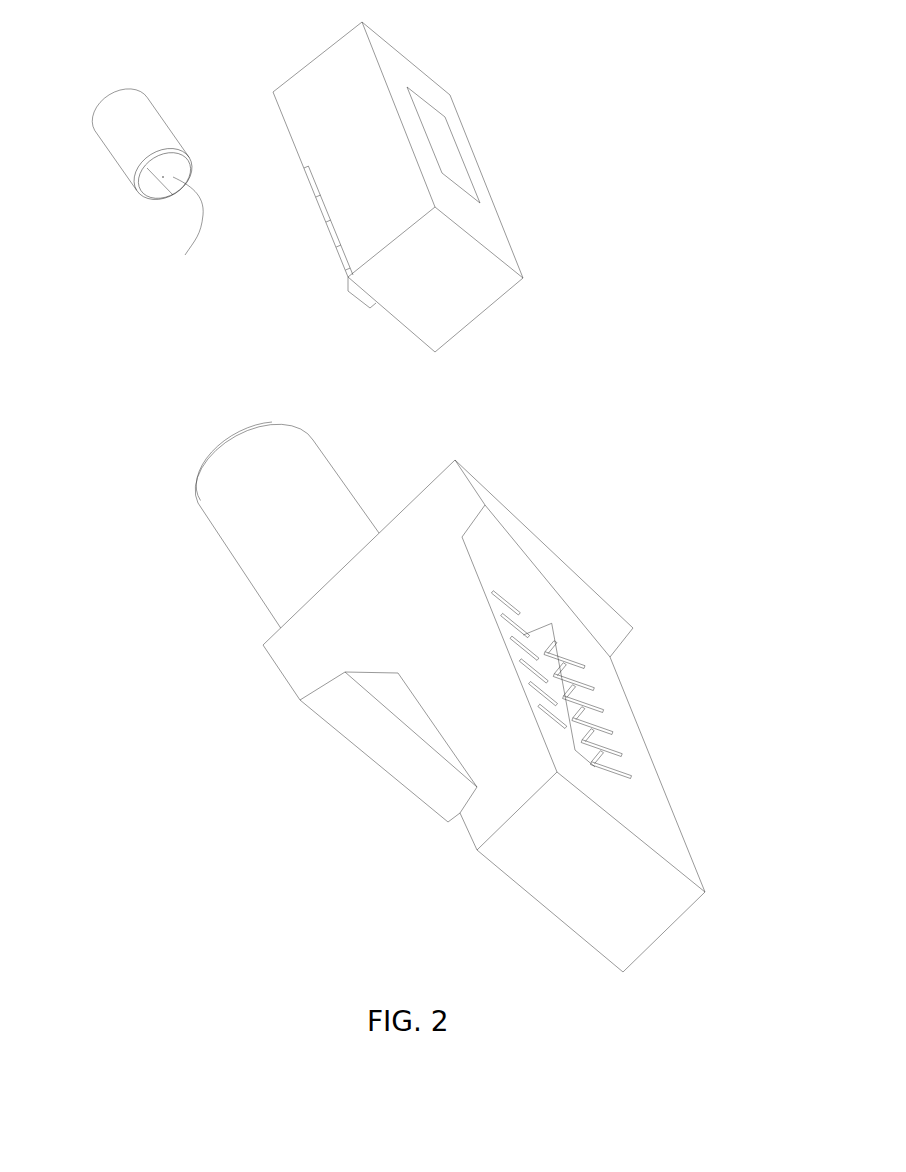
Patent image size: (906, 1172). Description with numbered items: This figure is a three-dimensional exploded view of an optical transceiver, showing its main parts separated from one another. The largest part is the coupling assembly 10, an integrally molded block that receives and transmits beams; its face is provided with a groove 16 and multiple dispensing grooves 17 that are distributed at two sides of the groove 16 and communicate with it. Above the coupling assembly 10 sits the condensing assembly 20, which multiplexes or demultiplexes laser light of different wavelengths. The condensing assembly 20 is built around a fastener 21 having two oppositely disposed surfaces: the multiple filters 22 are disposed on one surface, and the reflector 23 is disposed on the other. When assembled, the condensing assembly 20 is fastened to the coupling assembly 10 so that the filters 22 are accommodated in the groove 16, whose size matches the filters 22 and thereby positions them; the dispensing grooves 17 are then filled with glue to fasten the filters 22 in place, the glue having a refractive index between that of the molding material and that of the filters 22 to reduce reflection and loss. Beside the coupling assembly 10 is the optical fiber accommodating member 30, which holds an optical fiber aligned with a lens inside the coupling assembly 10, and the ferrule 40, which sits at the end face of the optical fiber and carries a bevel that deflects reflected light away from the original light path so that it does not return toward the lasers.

The coupling assembly 10 is at (586, 483).
The groove 16 is at (563, 707).
The dispensing grooves 17 is at (583, 706).
The condensing assembly 20 is at (464, 193).
The fastener 21 is at (408, 268).
The filters 22 is at (330, 239).
The reflector 23 is at (455, 172).
The optical fiber accommodating member 30 is at (156, 527).
The ferrule 40 is at (147, 123).